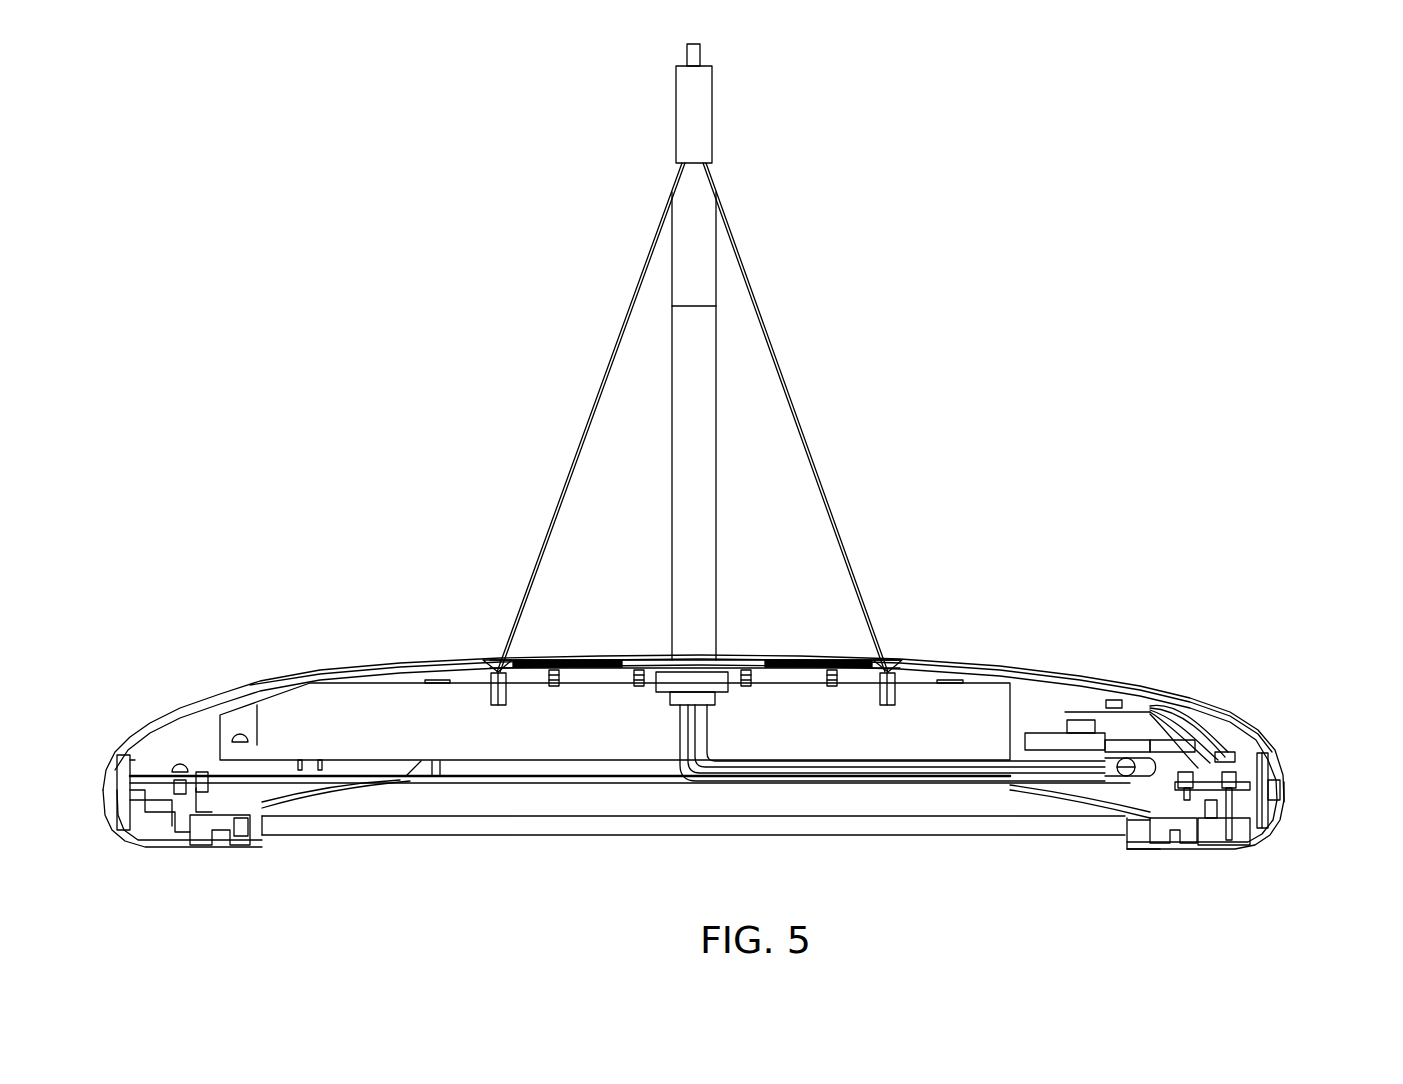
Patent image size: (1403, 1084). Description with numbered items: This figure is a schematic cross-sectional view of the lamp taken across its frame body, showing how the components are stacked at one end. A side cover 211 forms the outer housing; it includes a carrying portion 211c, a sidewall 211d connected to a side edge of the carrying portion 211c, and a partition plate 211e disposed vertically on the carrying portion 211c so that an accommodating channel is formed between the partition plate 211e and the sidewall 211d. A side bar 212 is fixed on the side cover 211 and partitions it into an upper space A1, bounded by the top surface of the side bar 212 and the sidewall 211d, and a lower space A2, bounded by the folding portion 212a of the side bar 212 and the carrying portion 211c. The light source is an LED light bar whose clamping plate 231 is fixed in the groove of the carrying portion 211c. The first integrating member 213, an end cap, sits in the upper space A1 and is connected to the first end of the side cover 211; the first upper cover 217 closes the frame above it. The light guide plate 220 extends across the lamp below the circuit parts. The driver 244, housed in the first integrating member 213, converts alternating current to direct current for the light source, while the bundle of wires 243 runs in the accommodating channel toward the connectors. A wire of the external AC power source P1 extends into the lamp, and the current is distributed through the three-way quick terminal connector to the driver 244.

The side cover 211 is at (1292, 836).
The carrying portion 211c is at (1162, 845).
The sidewall 211d is at (1279, 766).
The partition plate 211e is at (1218, 838).
The side bar 212 is at (1256, 746).
The folding portion 212a is at (1142, 745).
The first integrating member 213 is at (1075, 782).
The first upper cover 217 is at (914, 666).
The light guide plate 220 is at (907, 820).
The clamping plate 231 is at (1186, 832).
The bundle of wires 243 is at (1232, 812).
The driver 244 is at (985, 692).
The upper space A1 is at (1229, 742).
The lower space A2 is at (1146, 845).
The external AC power source P1 is at (808, 765).